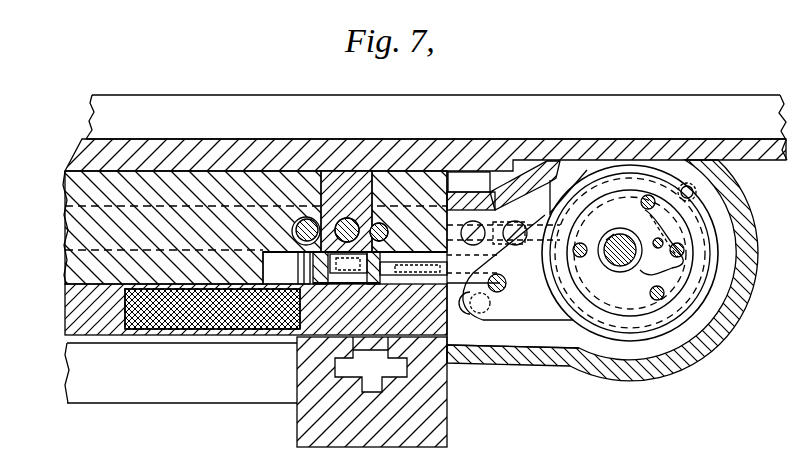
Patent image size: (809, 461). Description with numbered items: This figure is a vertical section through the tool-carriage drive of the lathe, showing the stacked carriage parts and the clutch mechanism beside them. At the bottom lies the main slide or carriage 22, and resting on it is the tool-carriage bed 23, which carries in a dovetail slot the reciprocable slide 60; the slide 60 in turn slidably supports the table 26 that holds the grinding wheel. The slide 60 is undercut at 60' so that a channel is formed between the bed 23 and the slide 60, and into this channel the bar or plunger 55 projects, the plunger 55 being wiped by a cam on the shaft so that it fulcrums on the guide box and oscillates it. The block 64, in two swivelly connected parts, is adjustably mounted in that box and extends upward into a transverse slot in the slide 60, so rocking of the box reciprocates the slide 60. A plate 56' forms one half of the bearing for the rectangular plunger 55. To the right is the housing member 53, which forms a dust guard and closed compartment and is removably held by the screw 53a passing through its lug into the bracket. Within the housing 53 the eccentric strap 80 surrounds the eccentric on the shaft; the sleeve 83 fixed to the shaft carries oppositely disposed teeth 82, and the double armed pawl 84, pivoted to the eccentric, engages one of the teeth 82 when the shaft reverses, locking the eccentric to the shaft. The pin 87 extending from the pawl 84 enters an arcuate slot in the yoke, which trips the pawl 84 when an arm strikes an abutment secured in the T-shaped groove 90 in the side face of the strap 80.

The main slide or carriage 22 is at (181, 373).
The tool-carriage bed 23 is at (66, 308).
The table 26 is at (436, 127).
The housing member 53 is at (635, 382).
The screw 53a is at (514, 156).
The bar or plunger 55 is at (407, 258).
The plate 56' is at (538, 188).
The slide or sub-base 60 is at (227, 227).
The undercut 60' is at (355, 268).
The block 64 is at (361, 178).
The eccentric strap 80 is at (530, 318).
The teeth 82 is at (611, 229).
The sleeve 83 is at (604, 240).
The double armed pawl 84 is at (663, 273).
The pin 87 is at (688, 258).
The T-shaped groove 90 is at (603, 323).